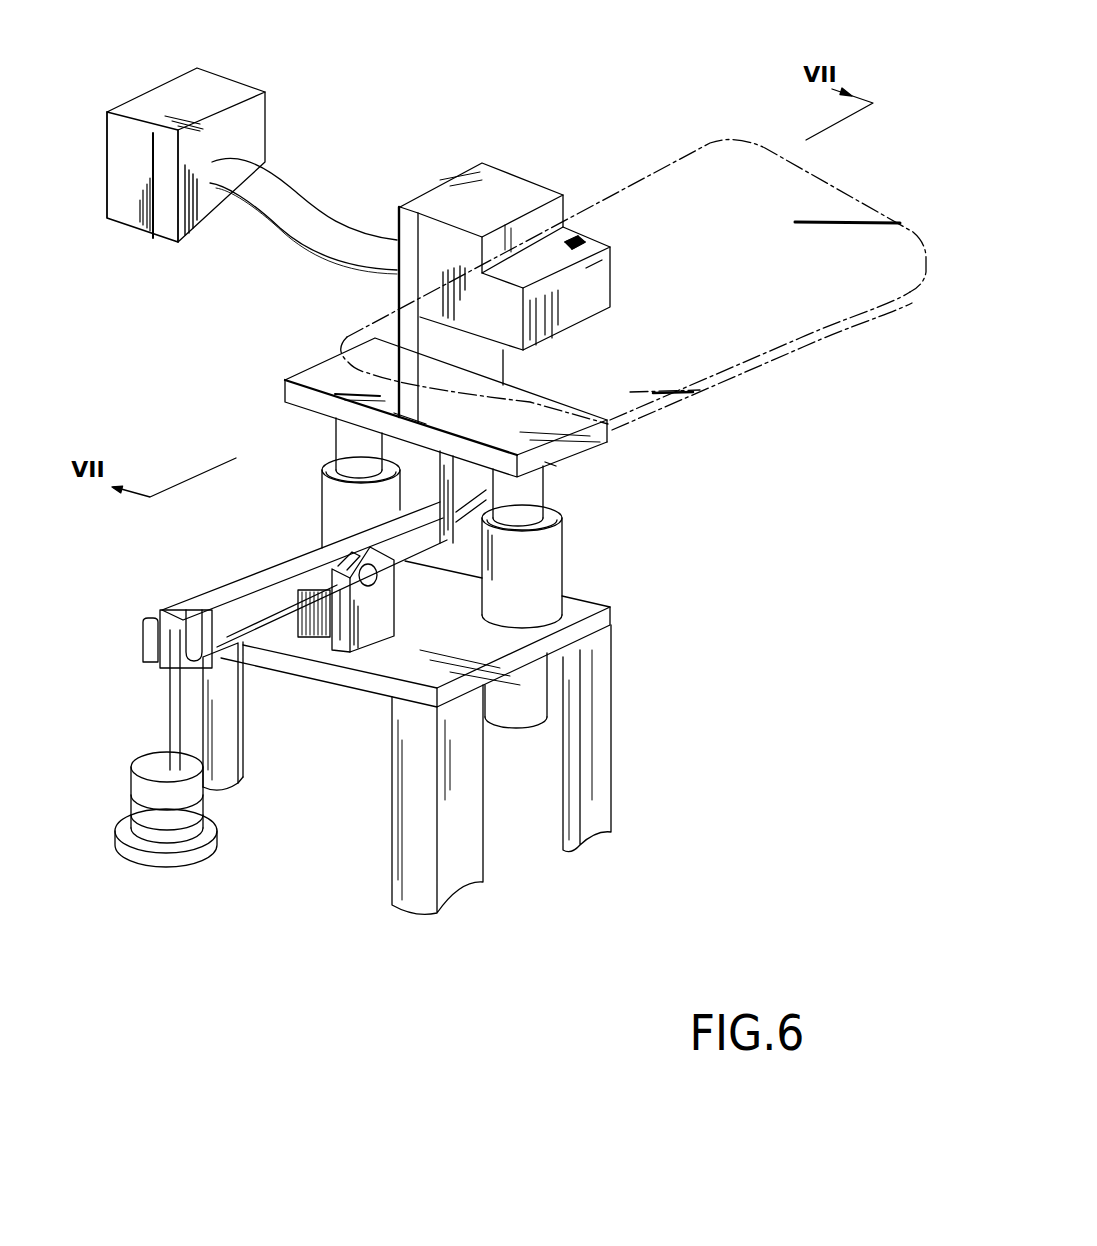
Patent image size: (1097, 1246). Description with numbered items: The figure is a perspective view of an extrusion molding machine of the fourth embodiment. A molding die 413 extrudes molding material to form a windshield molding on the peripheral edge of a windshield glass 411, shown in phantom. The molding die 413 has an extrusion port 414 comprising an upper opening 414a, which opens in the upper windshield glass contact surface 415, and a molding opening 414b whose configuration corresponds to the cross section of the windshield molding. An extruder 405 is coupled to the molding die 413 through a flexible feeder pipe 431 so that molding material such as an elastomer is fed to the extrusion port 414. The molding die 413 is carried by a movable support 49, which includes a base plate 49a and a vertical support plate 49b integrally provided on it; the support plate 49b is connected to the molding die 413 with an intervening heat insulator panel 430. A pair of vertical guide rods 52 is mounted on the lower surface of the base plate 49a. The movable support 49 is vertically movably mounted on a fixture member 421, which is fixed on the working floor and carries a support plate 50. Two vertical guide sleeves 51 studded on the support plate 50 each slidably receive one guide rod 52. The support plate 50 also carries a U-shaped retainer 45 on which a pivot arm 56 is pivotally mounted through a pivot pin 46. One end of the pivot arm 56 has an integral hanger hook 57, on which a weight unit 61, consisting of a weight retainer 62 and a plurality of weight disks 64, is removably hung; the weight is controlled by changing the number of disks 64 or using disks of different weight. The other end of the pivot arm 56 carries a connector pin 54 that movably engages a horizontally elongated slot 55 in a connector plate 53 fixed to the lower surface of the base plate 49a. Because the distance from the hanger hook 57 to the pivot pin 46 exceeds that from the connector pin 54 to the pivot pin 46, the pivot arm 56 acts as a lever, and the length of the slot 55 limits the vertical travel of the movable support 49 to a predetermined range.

The extruder 405 is at (240, 82).
The flexible feeder pipe 431 is at (320, 225).
The heat insulator panel 430 is at (505, 180).
The molding die 413 is at (622, 287).
The extrusion port 414 is at (598, 234).
The upper opening 414a is at (570, 242).
The molding opening 414b is at (590, 240).
The windshield glass contact surface 415 is at (596, 266).
The movable support 49 is at (487, 384).
The base plate 49a is at (614, 441).
The vertical support plate 49b is at (388, 318).
The windshield glass 411 is at (795, 323).
The vertical guide rods 52 is at (336, 436).
The vertical guide sleeves 51 is at (322, 502).
The connector plate 53 is at (470, 477).
The connector pin 54 is at (556, 464).
The horizontally elongated slot 55 is at (488, 552).
The pivot arm 56 is at (268, 572).
The hanger hook 57 is at (225, 652).
The weight retainer 62 is at (166, 692).
The weight disks 64 is at (150, 762).
The weight unit 61 is at (144, 802).
The U-shaped retainer 45 is at (374, 616).
The pivot pin 46 is at (378, 571).
The support plate 50 is at (582, 607).
The fixture member 421 is at (616, 670).